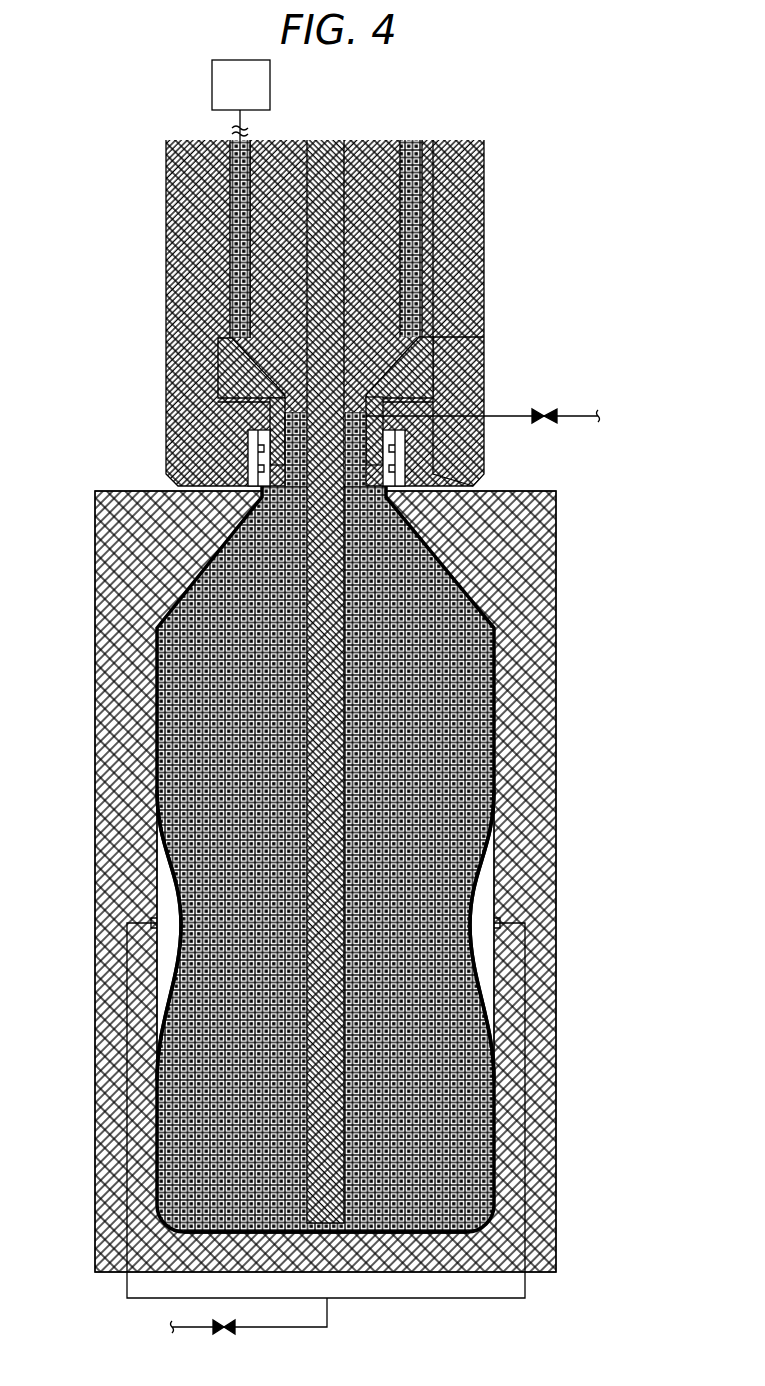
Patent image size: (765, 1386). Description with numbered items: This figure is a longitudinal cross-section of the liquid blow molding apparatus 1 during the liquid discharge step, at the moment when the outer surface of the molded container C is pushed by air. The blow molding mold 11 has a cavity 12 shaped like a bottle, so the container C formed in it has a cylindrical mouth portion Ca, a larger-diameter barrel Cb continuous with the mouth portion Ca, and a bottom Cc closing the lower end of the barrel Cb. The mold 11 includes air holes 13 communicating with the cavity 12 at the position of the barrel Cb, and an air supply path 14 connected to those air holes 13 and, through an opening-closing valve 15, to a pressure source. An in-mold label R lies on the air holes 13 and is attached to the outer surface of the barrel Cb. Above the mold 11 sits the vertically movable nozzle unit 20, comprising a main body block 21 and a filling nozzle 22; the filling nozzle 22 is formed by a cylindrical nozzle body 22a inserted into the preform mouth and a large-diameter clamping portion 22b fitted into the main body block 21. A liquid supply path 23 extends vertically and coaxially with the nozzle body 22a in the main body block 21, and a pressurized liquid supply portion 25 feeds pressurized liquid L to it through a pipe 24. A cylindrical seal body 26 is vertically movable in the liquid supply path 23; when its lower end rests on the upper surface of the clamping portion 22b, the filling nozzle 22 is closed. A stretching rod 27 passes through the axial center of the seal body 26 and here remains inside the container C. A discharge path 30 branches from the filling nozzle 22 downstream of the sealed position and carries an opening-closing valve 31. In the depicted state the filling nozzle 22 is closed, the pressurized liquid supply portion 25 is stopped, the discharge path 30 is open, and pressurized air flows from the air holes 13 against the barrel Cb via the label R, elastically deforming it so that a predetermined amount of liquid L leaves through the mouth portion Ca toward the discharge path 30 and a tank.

The liquid blow molding apparatus 1 is at (556, 199).
The blow molding mold 11 is at (554, 541).
The cavity 12 is at (485, 942).
The air holes 13 is at (140, 911).
The air supply path 14 is at (437, 1300).
The opening-closing valve 15 is at (236, 1329).
The nozzle unit 20 is at (486, 161).
The main body block 21 is at (465, 237).
The filling nozzle 22 is at (436, 368).
The nozzle body 22a is at (278, 447).
The clamping portion 22b is at (228, 364).
The liquid supply path 23 is at (240, 205).
The pipe 24 is at (240, 122).
The pressurized liquid supply portion 25 is at (271, 86).
The seal body 26 is at (270, 247).
The stretching rod 27 is at (333, 192).
The discharge path 30 is at (452, 410).
The opening-closing valve 31 is at (556, 424).
The liquid L is at (412, 280).
The container C is at (498, 660).
The mouth portion Ca is at (395, 457).
The barrel Cb is at (498, 748).
The bottom Cc is at (400, 1234).
The label R is at (484, 853).